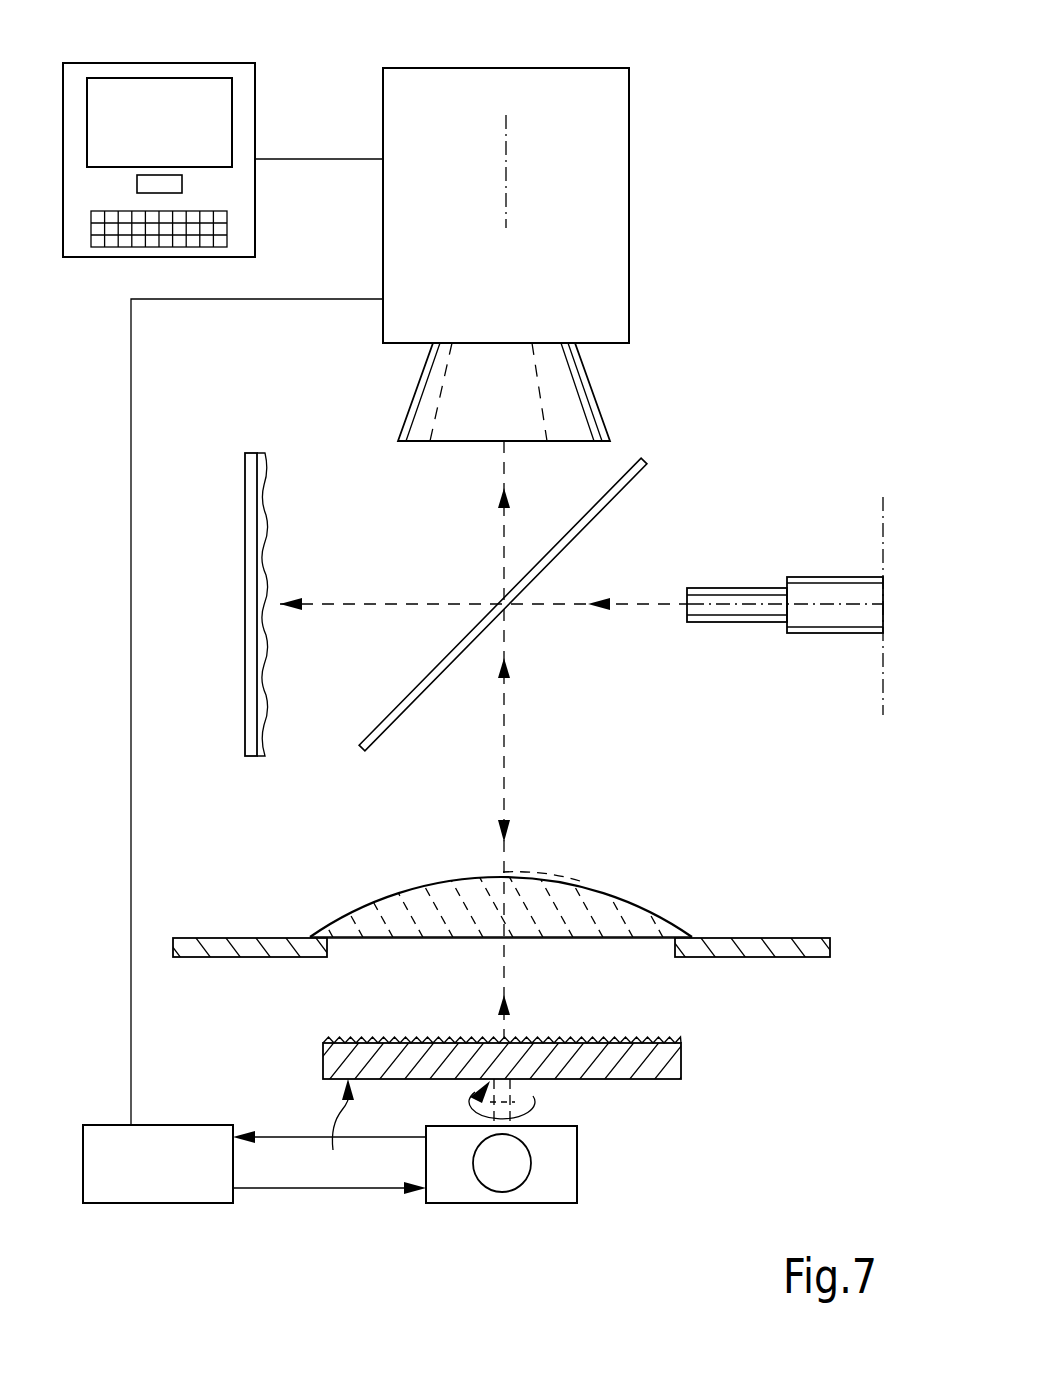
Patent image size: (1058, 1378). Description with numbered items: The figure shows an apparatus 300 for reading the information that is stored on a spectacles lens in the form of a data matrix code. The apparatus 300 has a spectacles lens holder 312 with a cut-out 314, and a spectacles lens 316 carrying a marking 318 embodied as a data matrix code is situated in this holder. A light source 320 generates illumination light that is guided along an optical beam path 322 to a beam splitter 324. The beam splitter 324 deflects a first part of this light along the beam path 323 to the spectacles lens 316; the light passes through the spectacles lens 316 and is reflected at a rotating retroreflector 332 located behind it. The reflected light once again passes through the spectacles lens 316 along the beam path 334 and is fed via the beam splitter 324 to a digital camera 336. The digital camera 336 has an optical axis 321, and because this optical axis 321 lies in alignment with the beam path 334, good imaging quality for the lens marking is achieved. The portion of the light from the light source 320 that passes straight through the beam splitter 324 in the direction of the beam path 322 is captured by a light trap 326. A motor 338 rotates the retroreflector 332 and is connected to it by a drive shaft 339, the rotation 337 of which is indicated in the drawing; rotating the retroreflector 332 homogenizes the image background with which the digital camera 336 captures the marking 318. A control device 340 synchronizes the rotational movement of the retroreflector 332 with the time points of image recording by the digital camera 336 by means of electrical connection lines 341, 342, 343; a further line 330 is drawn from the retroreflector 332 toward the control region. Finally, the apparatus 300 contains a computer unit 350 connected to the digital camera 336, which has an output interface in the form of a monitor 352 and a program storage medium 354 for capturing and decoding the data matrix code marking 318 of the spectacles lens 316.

The apparatus 300 is at (805, 125).
The spectacles lens holder 312 is at (783, 945).
The cut-out 314 is at (667, 952).
The spectacles lens 316 is at (635, 920).
The marking 318 is at (553, 873).
The light source 320 is at (835, 577).
The optical axis 321 is at (506, 193).
The optical beam path 322 is at (630, 604).
The beam path 323 is at (505, 788).
The beam splitter 324 is at (365, 750).
The light trap 326 is at (245, 570).
The signal line 330 is at (335, 1132).
The retroreflector 332 is at (630, 1038).
The beam path 334 is at (504, 528).
The digital camera 336 is at (645, 283).
The rotation direction 337 is at (470, 1108).
The motor 338 is at (563, 1167).
The drive shaft 339 is at (535, 1093).
The control device 340 is at (158, 1203).
The electrical connection line 341 is at (131, 358).
The electrical connection line 342 is at (272, 1137).
The electrical connection line 343 is at (345, 1188).
The computer unit 350 is at (90, 63).
The monitor 352 is at (183, 78).
The program storage medium 354 is at (182, 182).